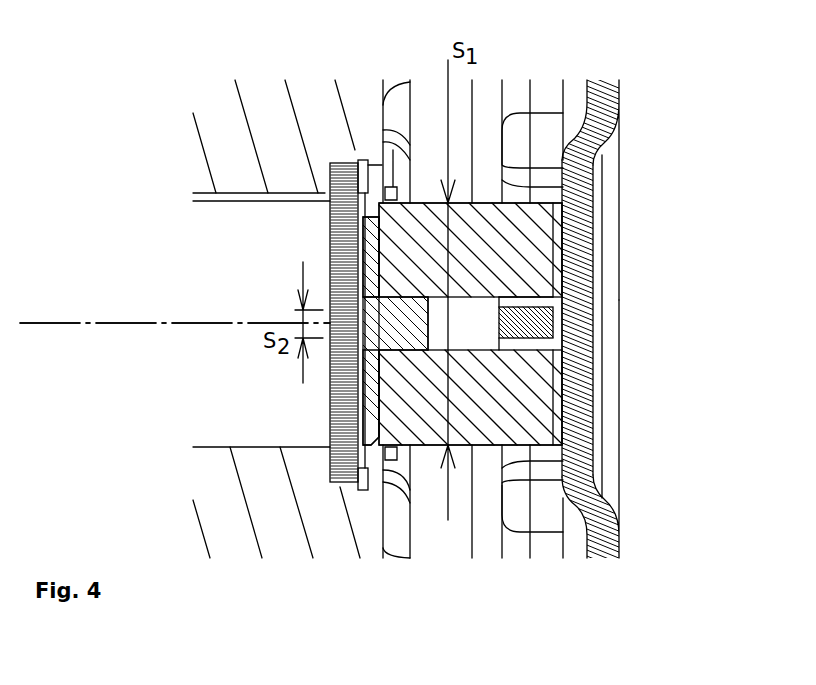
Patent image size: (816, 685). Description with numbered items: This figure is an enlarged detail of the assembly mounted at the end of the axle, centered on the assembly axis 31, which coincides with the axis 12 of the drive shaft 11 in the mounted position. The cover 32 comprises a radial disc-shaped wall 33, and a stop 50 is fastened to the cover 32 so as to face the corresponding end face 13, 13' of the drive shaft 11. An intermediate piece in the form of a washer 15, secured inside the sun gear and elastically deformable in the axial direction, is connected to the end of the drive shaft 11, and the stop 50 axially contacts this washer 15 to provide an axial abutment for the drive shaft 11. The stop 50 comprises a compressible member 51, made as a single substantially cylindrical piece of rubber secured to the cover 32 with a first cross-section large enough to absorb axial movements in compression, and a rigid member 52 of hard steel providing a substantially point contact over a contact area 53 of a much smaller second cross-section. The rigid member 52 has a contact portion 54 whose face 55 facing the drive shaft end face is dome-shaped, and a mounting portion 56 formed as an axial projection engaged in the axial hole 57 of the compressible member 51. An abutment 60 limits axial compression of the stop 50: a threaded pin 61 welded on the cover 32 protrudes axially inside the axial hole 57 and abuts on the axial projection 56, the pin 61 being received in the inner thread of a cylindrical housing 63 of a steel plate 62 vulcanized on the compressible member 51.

The drive shaft 11 is at (206, 425).
The axis of the drive shafts 12 is at (118, 323).
The axis of the assembly 31 is at (175, 252).
The end face of the drive shaft 13 is at (305, 325).
The drive shaft end face 13' is at (400, 282).
The washer 15 is at (342, 177).
The cover 32 is at (622, 101).
The radial disc-shaped wall 33 is at (605, 520).
The stop 50 is at (530, 610).
The compressible member 51 is at (485, 417).
The rigid member 52 is at (373, 438).
The contact area 53 is at (355, 302).
The contact portion 54 is at (366, 258).
The face of the contact portion 55 is at (365, 240).
The mounting portion 56 is at (415, 347).
The axial hole 57 is at (487, 337).
The abutment 60 is at (514, 292).
The pin 61 is at (563, 323).
The plate 62 is at (555, 240).
The cylindrical housing 63 is at (550, 388).